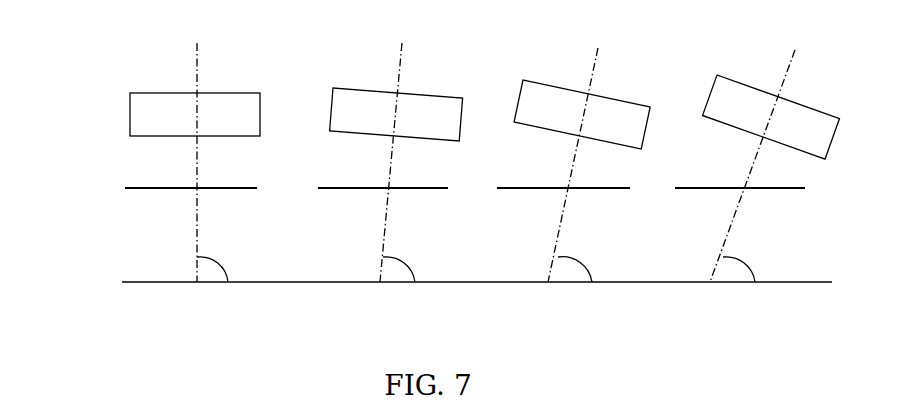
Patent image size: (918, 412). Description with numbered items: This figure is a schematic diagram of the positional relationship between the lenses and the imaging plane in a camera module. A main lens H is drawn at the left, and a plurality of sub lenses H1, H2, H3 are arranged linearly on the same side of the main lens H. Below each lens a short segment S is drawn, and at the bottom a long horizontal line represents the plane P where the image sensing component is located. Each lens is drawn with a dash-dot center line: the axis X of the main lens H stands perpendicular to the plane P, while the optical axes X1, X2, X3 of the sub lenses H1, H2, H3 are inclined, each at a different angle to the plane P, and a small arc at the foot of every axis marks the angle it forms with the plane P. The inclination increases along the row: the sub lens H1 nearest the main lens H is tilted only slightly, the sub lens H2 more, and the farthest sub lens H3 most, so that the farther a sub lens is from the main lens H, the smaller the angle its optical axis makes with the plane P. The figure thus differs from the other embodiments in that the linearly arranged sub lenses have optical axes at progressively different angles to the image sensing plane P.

The main lens H is at (130, 93).
The sub lens H1 is at (335, 87).
The sub lens H2 is at (523, 80).
The sub lens H3 is at (710, 90).
The substrate S is at (127, 187).
The plane where the image sensing component is located P is at (123, 282).
The head axis X is at (196, 144).
The head axis (first tilted position) X1 is at (392, 145).
The head axis (second tilted position) X2 is at (573, 153).
The head axis (third tilted position) X3 is at (757, 153).